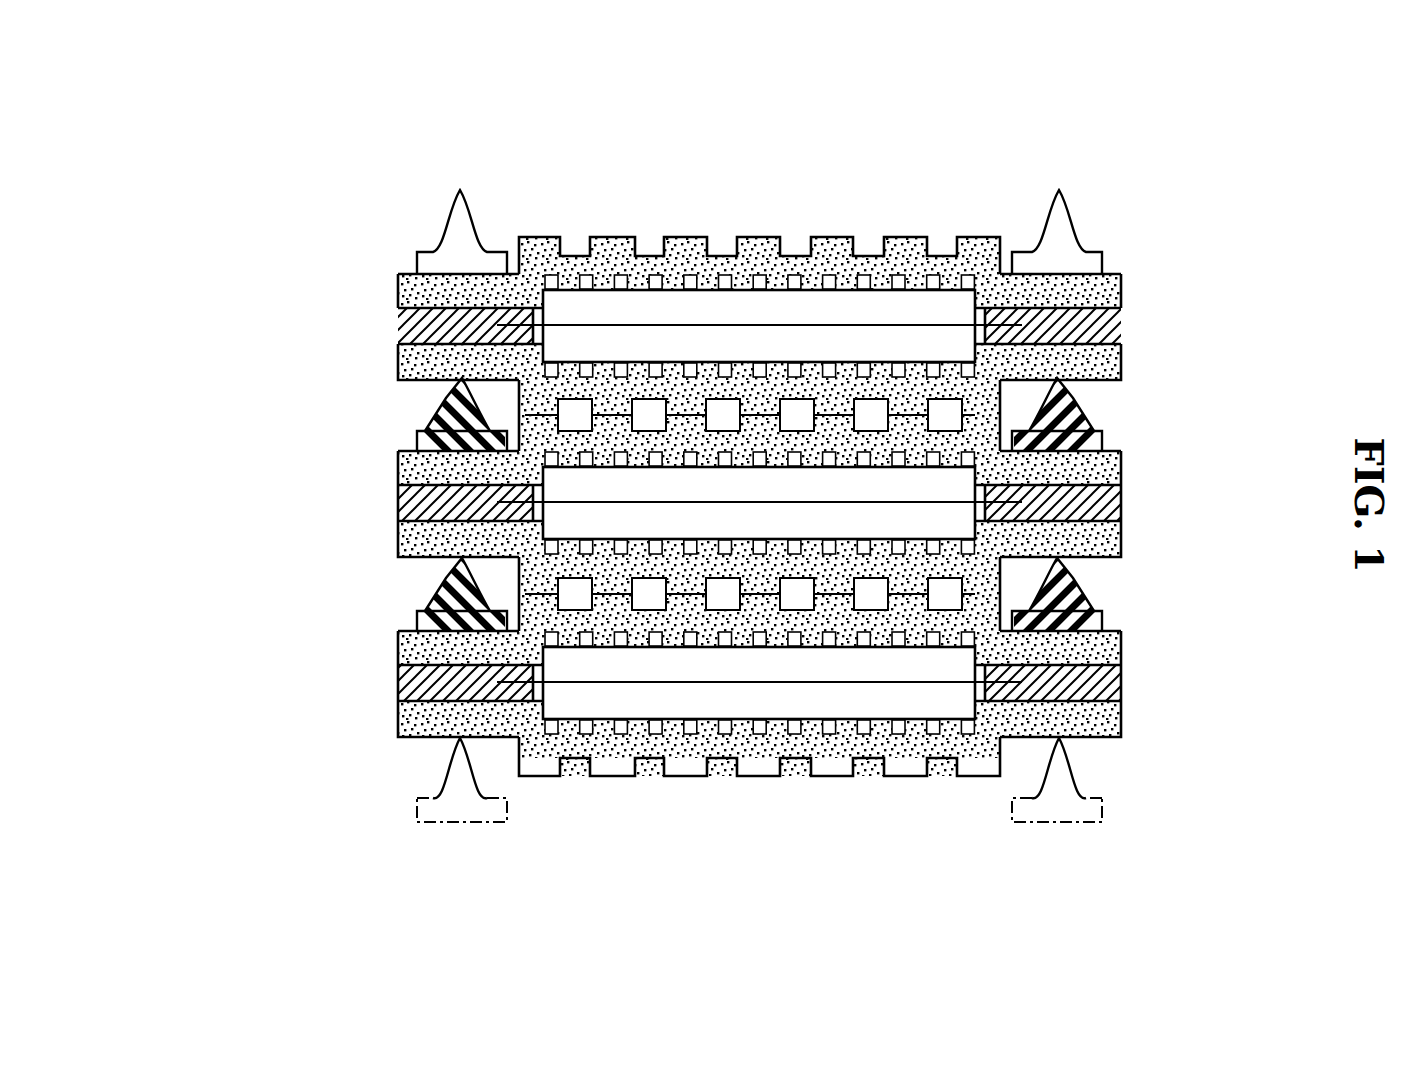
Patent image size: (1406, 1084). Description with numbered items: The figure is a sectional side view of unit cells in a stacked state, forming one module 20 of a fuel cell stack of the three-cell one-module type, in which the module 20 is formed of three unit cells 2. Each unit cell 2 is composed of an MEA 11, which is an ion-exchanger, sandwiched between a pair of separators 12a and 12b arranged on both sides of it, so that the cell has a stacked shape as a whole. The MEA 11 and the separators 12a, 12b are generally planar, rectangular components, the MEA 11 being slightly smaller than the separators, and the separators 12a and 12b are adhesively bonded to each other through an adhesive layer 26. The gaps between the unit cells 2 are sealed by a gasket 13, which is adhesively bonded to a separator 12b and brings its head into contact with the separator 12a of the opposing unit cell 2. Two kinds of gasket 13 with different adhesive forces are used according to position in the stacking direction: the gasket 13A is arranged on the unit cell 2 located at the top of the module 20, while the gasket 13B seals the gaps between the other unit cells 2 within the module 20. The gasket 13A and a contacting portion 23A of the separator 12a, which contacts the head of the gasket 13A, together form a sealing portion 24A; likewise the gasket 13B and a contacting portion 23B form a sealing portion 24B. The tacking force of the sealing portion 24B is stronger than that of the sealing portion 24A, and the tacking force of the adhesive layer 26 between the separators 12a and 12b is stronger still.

The module 20 is at (1155, 252).
The unit cell 2 is at (1143, 277).
The MEA (ion-exchanger) 11 is at (678, 325).
The separator 12a is at (398, 363).
The separator 12b is at (398, 297).
The adhesive layer 26 is at (410, 325).
The gasket 13 is at (1057, 810).
The gasket 13A is at (446, 222).
The gasket 13B is at (416, 438).
The contacting portion 23A is at (458, 742).
The contacting portion 23B is at (440, 406).
The sealing portion 24A is at (218, 735).
The sealing portion 24B is at (218, 385).